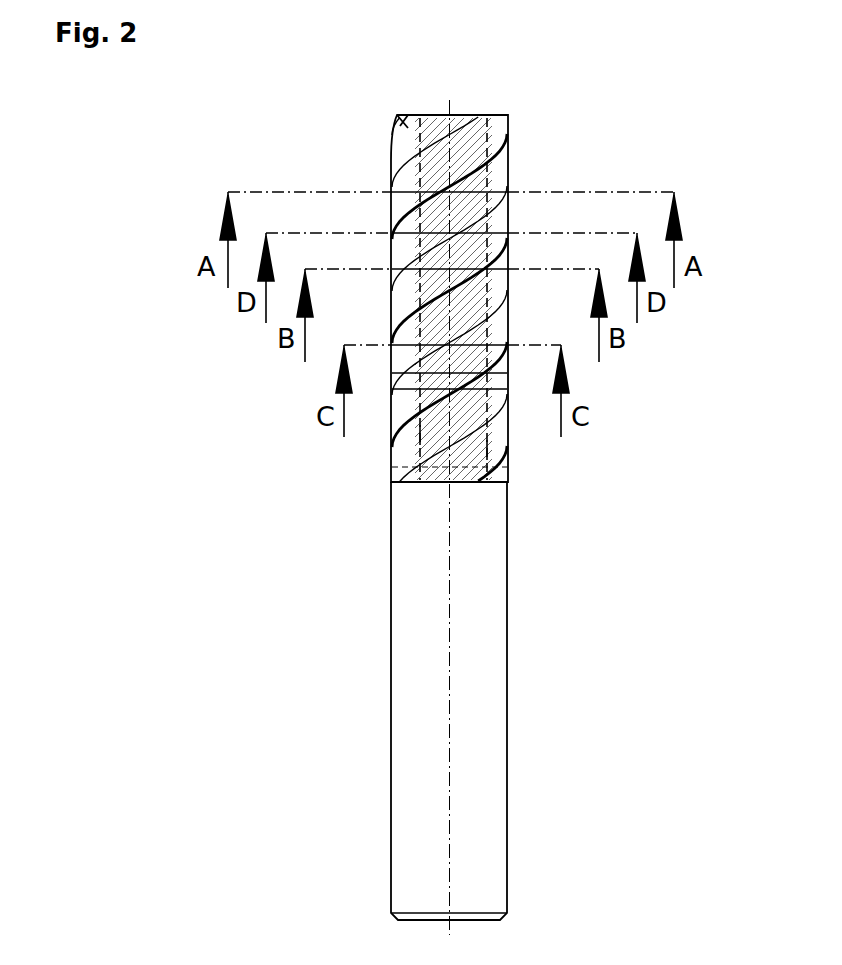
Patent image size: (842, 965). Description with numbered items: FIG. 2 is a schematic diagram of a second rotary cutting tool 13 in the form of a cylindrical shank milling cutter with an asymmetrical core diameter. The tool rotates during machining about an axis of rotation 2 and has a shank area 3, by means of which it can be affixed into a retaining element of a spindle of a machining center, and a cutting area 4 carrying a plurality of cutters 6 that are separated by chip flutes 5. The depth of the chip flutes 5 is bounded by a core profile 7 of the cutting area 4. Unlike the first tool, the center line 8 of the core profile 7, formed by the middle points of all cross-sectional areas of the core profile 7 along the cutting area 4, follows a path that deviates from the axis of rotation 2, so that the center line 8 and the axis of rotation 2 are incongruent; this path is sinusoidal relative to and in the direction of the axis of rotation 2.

The axis of rotation 2 is at (450, 405).
The shank area 3 is at (357, 744).
The cutting area 4 is at (417, 298).
The chip flutes 5 is at (495, 128).
The cutters 6 is at (405, 118).
The core profile 7 is at (443, 445).
The center line 8 is at (420, 450).
The second rotary cutting tool 13 is at (307, 488).